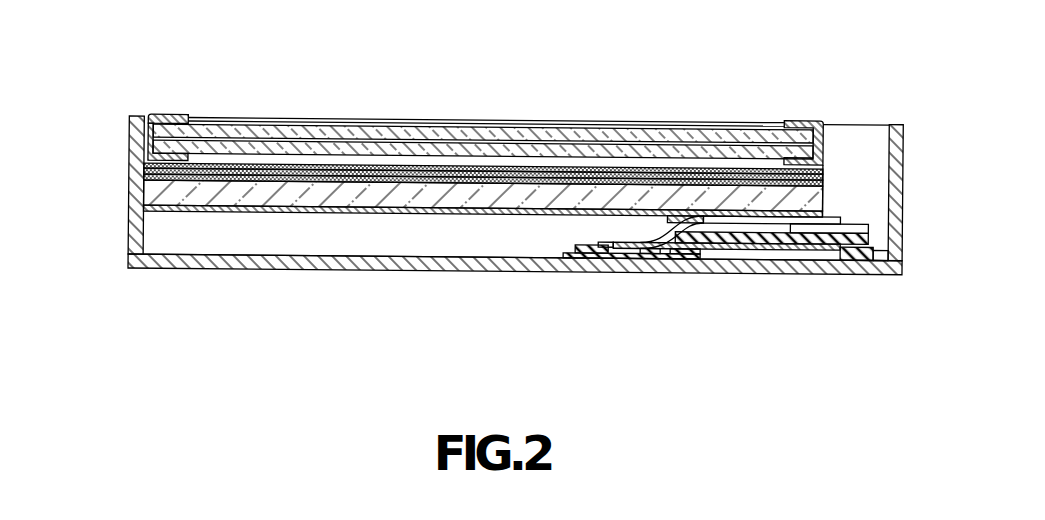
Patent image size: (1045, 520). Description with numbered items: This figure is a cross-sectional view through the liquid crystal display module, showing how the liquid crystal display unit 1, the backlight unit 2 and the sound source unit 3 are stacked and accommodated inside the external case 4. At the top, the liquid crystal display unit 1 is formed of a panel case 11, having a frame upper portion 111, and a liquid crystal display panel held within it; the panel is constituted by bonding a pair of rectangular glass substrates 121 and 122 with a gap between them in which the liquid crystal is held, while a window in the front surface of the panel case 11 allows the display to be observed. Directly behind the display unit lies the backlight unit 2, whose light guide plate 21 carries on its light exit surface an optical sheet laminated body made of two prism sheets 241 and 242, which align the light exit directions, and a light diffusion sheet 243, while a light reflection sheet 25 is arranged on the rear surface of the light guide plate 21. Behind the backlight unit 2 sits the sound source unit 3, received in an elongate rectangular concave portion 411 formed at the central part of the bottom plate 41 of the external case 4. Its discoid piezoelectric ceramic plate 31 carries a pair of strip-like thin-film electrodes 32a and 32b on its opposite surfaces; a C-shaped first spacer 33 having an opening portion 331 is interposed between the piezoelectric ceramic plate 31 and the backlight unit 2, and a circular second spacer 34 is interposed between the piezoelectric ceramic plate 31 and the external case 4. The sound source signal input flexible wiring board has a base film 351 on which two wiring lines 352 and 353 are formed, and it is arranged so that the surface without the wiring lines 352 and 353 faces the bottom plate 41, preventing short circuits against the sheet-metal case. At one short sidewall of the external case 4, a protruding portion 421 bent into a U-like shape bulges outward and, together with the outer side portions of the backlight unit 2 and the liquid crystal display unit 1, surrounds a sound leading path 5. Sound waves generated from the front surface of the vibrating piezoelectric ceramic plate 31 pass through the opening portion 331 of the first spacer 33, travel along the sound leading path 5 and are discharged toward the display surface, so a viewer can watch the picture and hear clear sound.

The liquid crystal display unit 1 is at (497, 113).
The backlight unit 2 is at (431, 153).
The sound source unit 3 is at (870, 217).
The external case 4 is at (519, 238).
The sound leading path 5 is at (847, 137).
The panel case 11 is at (175, 99).
The frame upper portion 111 is at (187, 115).
The light guide plate 21 is at (162, 193).
The light reflection sheet 25 is at (162, 208).
The piezoelectric ceramic plate 31 is at (800, 240).
The thin-film electrode 32a is at (740, 246).
The thin-film electrode 32b is at (688, 233).
The first spacer 33 is at (660, 211).
The second spacer 34 is at (876, 254).
The bottom plate 41 is at (514, 298).
The glass substrate 121 is at (682, 127).
The glass substrate 122 is at (738, 143).
The prism sheet 241 is at (143, 177).
The prism sheet 242 is at (143, 171).
The light diffusion sheet 243 is at (143, 164).
The opening portion 331 is at (836, 256).
The base film 351 is at (592, 249).
The wiring line 352 is at (558, 254).
The wiring line 353 is at (648, 249).
The concave portion 411 is at (375, 235).
The protruding portion 421 is at (896, 172).